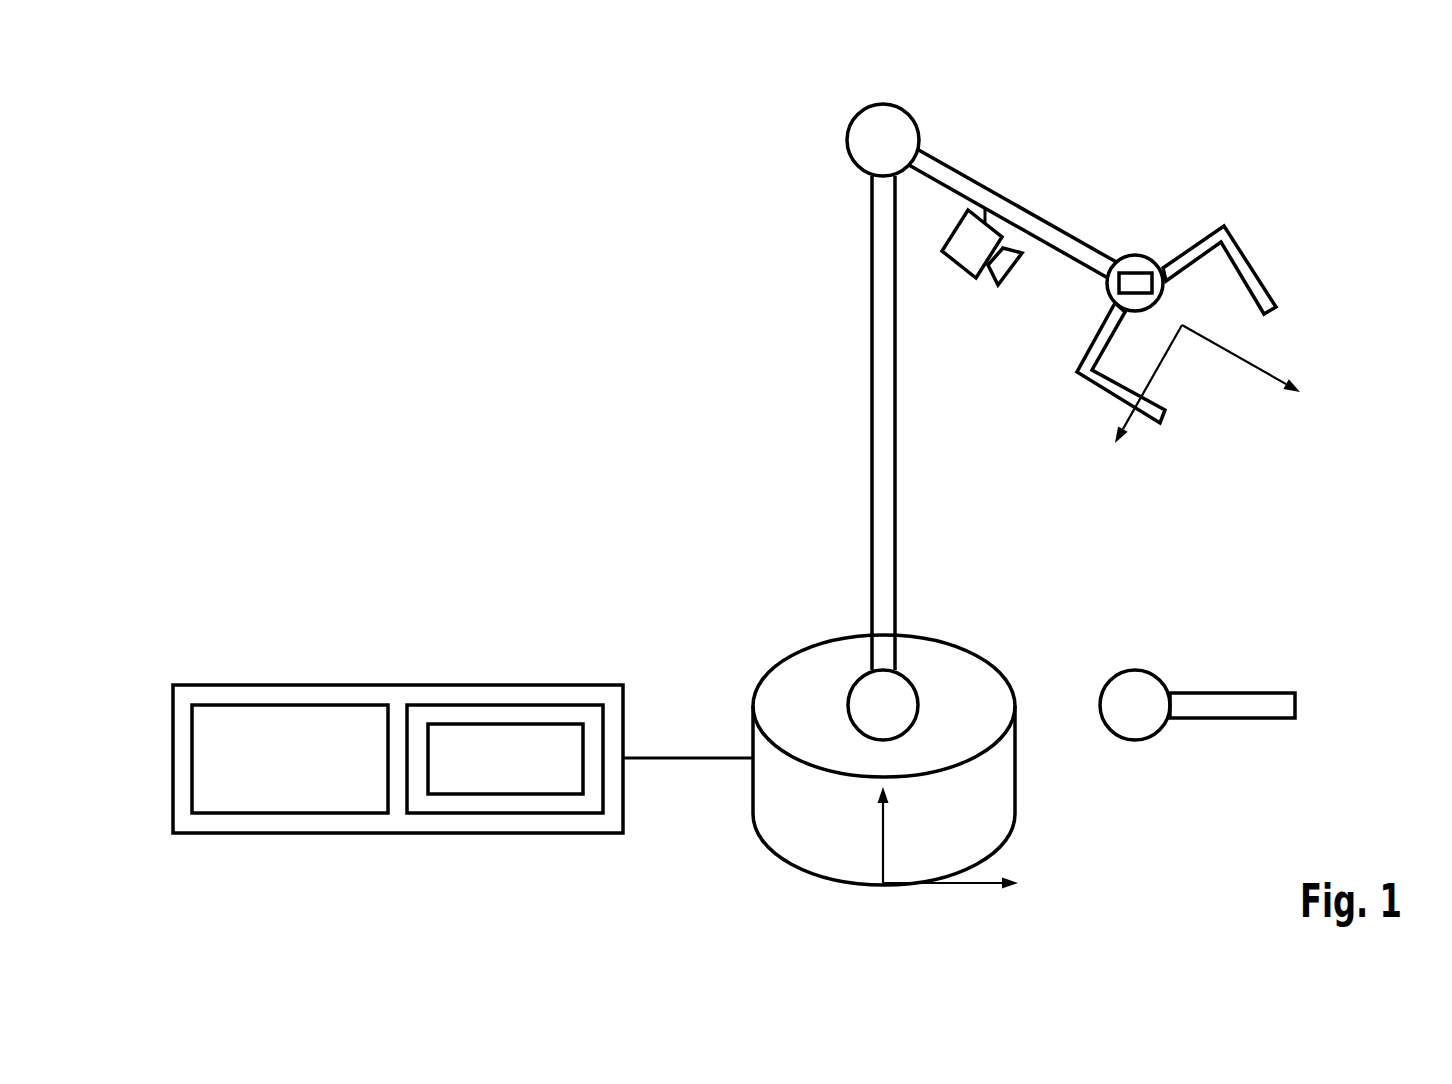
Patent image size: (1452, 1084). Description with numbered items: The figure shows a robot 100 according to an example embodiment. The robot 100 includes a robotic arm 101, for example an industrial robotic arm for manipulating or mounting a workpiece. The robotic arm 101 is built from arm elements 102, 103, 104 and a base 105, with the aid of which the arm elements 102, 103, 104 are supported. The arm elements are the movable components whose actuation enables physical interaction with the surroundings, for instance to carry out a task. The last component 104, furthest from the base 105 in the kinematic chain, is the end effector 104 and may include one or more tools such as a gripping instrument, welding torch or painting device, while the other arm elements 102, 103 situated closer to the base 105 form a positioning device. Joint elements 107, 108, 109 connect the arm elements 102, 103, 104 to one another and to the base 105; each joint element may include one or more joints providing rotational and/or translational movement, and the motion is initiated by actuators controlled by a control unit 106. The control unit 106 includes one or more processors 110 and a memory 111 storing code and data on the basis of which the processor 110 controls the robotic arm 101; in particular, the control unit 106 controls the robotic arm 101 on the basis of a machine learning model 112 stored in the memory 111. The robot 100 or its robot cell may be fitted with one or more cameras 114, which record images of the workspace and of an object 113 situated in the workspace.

The robot 100 is at (1283, 146).
The robotic arm 101 is at (832, 346).
The arm element 102 is at (880, 467).
The arm element 103 is at (1017, 212).
The end effector 104 is at (1249, 274).
The base 105 is at (998, 777).
The control unit 106 is at (399, 684).
The joint element 107 is at (865, 690).
The joint element 108 is at (852, 142).
The joint element 109 is at (1126, 263).
The processor 110 is at (314, 703).
The memory 111 is at (490, 703).
The machine learning model 112 is at (540, 724).
The object 113 is at (1141, 272).
The camera 114 is at (957, 266).